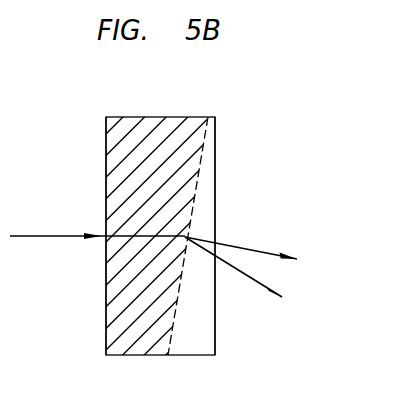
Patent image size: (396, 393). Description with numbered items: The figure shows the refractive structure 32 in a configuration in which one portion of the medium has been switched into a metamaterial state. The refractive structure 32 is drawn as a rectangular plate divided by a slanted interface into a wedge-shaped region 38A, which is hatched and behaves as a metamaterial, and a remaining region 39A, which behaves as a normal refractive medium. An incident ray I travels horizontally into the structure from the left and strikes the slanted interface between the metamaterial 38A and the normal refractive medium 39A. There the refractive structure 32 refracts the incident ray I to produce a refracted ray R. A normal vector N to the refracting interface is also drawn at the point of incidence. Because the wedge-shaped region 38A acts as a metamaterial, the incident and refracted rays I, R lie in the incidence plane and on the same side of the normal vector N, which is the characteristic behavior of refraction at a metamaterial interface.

The refractive structure 32 is at (123, 116).
The wedge-shaped region 38A is at (107, 166).
The remaining region 39A is at (215, 329).
The incident ray I is at (52, 238).
The normal vector N is at (262, 248).
The refracted ray R is at (258, 284).